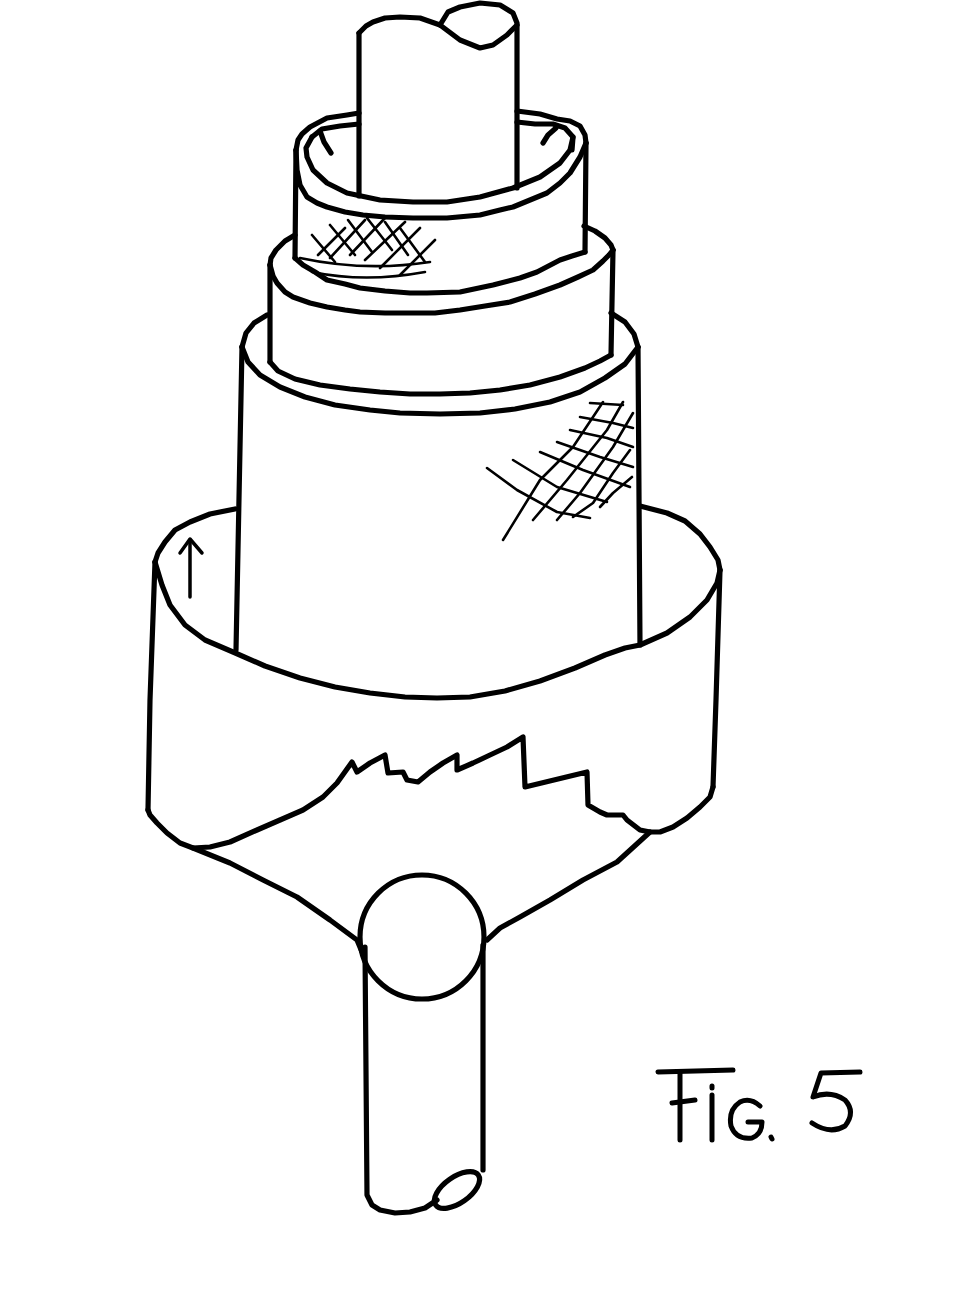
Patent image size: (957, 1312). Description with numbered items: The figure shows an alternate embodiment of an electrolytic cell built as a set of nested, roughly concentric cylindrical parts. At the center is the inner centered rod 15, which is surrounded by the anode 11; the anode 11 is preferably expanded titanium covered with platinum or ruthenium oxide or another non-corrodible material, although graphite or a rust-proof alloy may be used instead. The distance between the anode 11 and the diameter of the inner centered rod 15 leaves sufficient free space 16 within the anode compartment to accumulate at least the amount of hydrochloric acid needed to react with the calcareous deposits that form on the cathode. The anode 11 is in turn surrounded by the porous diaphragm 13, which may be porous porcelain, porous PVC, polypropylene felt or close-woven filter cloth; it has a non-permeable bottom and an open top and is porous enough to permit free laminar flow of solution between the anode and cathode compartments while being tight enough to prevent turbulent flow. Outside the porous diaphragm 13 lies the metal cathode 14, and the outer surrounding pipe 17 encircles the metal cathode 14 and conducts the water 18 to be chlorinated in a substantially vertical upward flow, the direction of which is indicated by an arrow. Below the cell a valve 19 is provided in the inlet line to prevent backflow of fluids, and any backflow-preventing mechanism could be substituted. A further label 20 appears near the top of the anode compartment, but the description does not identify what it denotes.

The anode 11 is at (562, 212).
The porous diaphragm 13 is at (595, 295).
The metal cathode 14 is at (632, 405).
The inner centered rod 15 is at (522, 53).
The free space 16 is at (580, 123).
The outer surrounding pipe 17 is at (715, 707).
The water 18 is at (163, 550).
The valve 19 is at (487, 927).
The annular gap 20 is at (317, 127).